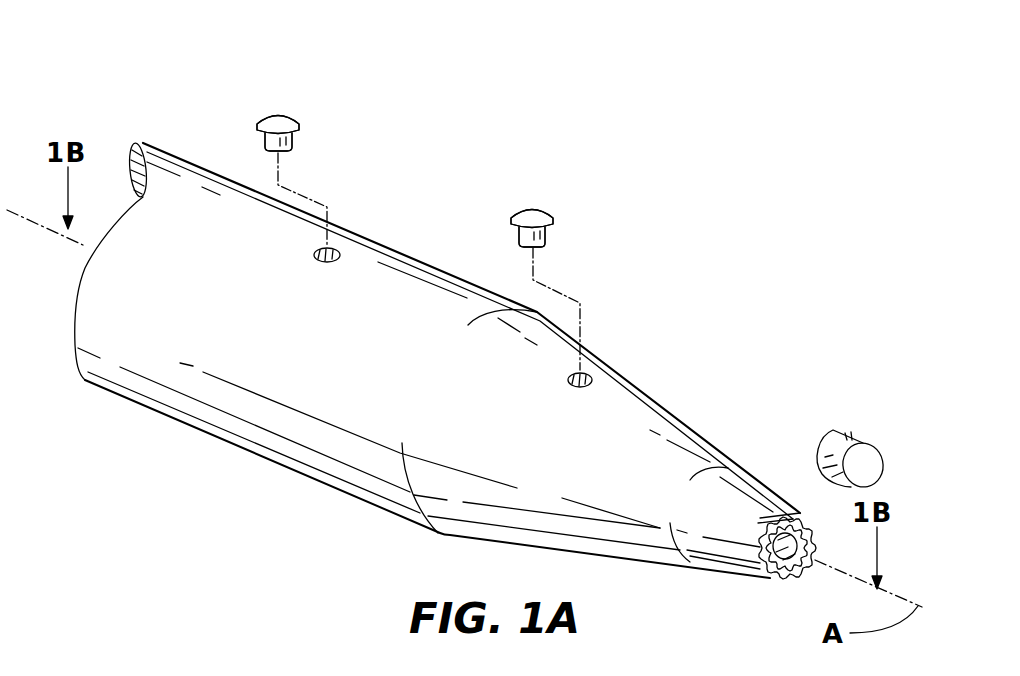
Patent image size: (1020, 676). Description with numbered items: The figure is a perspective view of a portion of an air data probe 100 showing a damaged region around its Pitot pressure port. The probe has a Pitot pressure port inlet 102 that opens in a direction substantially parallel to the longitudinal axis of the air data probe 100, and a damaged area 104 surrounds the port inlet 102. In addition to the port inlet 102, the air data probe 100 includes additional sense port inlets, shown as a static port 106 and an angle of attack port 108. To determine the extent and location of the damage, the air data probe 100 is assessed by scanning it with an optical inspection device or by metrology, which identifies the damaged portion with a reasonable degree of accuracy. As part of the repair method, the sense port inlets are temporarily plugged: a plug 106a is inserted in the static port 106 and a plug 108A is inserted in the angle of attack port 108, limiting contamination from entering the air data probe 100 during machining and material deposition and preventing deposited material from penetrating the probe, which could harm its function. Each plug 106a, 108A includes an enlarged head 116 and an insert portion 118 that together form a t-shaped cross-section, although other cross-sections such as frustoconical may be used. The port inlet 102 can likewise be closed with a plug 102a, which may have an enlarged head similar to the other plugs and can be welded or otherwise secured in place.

The air data probe 100 is at (442, 160).
The Pitot pressure port inlet 102 is at (802, 503).
The plug 102a is at (845, 435).
The damaged area 104 is at (800, 570).
The static port 106 is at (339, 257).
The plug 106a is at (282, 112).
The angle of attack port 108 is at (585, 372).
The plug 108A is at (532, 210).
The enlarged head 116 is at (274, 112).
The insert portion 118 is at (264, 139).